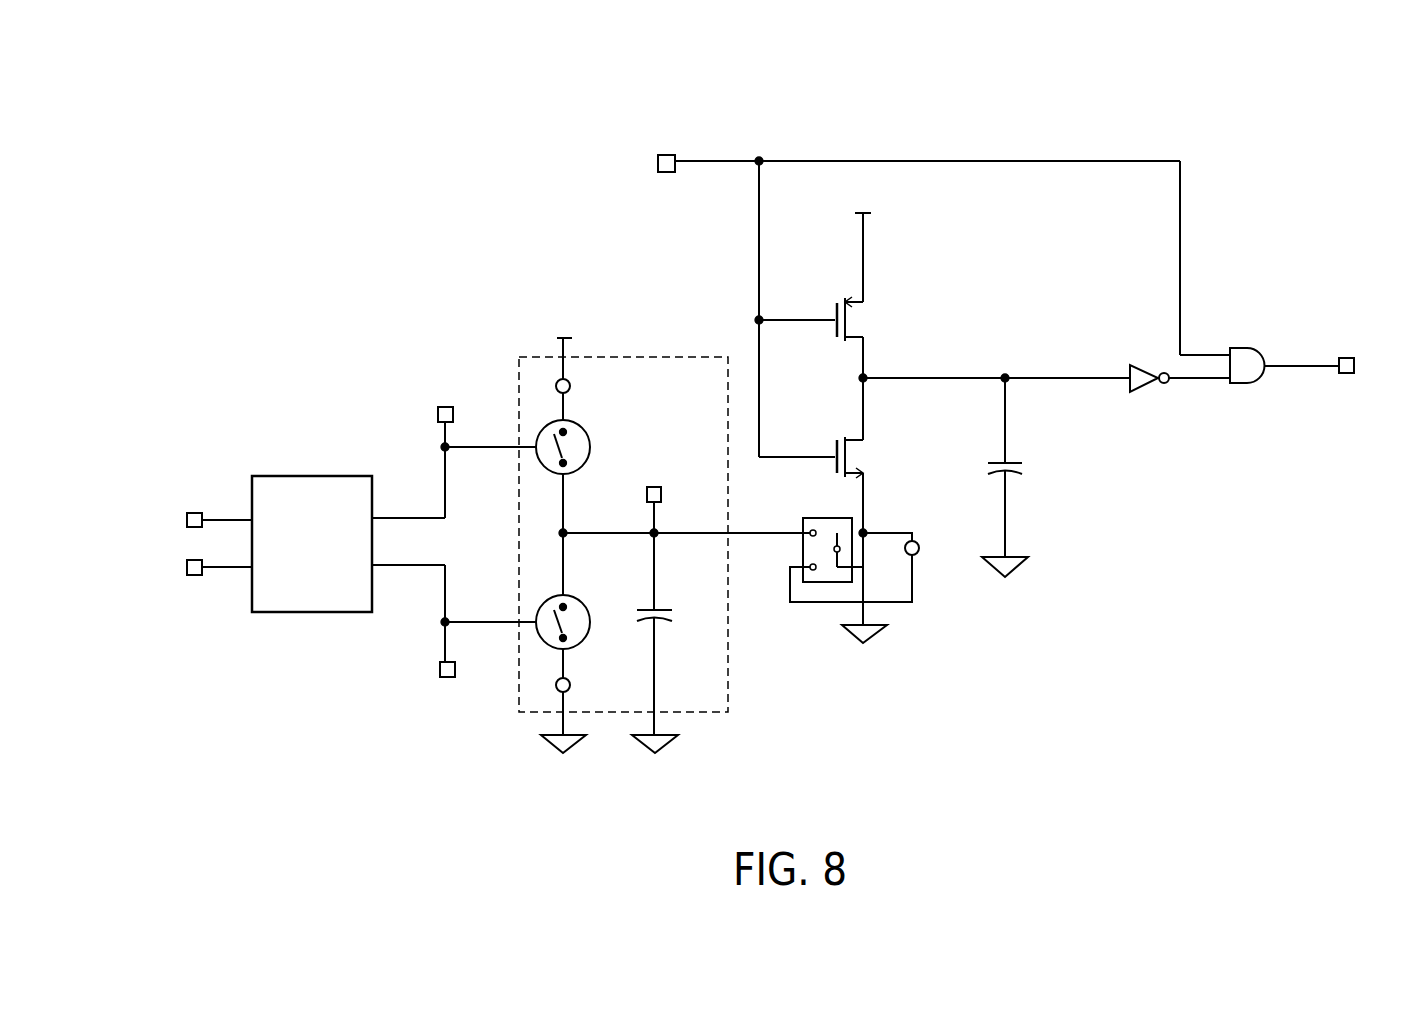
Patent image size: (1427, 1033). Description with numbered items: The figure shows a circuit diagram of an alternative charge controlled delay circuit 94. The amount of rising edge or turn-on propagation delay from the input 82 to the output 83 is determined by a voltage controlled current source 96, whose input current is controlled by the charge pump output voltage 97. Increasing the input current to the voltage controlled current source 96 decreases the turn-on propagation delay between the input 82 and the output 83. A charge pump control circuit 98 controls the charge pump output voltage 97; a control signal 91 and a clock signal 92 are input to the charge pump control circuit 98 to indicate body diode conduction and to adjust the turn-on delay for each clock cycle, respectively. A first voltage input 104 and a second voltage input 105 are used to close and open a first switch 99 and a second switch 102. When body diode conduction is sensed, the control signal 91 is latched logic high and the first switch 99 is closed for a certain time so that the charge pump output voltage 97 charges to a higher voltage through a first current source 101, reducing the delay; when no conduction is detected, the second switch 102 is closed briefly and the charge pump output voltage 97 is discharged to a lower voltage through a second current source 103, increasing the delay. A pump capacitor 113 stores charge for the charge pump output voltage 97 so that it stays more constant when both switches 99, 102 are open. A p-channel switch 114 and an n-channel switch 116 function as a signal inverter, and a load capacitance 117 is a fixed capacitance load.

The input 82 is at (668, 152).
The output 83 is at (1347, 357).
The control signal 91 is at (190, 513).
The clock signal 92 is at (192, 577).
The charge controlled delay circuit 94 is at (505, 227).
The voltage controlled current source 96 is at (802, 550).
The charge pump output voltage 97 is at (663, 493).
The charge pump control circuit 98 is at (273, 475).
The switch 99 is at (590, 458).
The current source 101 is at (572, 383).
The switch 102 is at (592, 622).
The current source 103 is at (572, 685).
The voltage input 104 is at (438, 413).
The voltage input 105 is at (440, 672).
The capacitor 113 is at (670, 615).
The switch 114 is at (848, 318).
The switch 116 is at (850, 458).
The capacitance 117 is at (1010, 473).